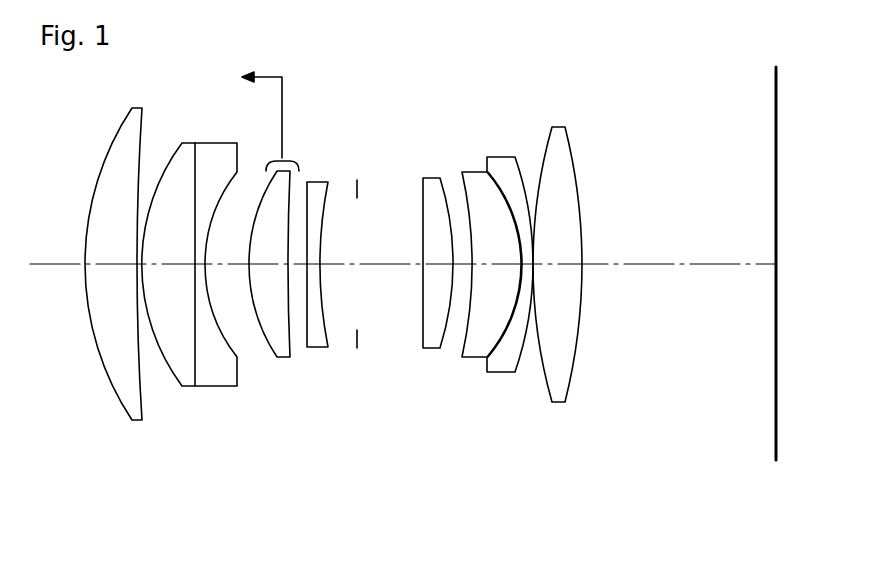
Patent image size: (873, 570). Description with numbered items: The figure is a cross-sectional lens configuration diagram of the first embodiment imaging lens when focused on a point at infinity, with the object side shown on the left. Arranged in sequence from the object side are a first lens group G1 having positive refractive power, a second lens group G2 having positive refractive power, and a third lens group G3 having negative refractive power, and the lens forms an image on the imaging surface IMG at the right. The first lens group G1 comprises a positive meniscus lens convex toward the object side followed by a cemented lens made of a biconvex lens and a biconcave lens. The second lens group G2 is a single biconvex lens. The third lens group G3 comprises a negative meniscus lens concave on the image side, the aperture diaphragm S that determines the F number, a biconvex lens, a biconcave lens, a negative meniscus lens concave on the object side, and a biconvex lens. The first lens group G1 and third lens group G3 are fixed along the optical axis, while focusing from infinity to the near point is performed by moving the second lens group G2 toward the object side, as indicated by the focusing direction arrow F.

The first lens group G1 is at (243, 418).
The second lens group G2 is at (299, 357).
The third lens group G3 is at (580, 402).
The aperture diaphragm S is at (358, 188).
The direction of focusing F is at (270, 107).
The imaging surface IMG is at (776, 451).